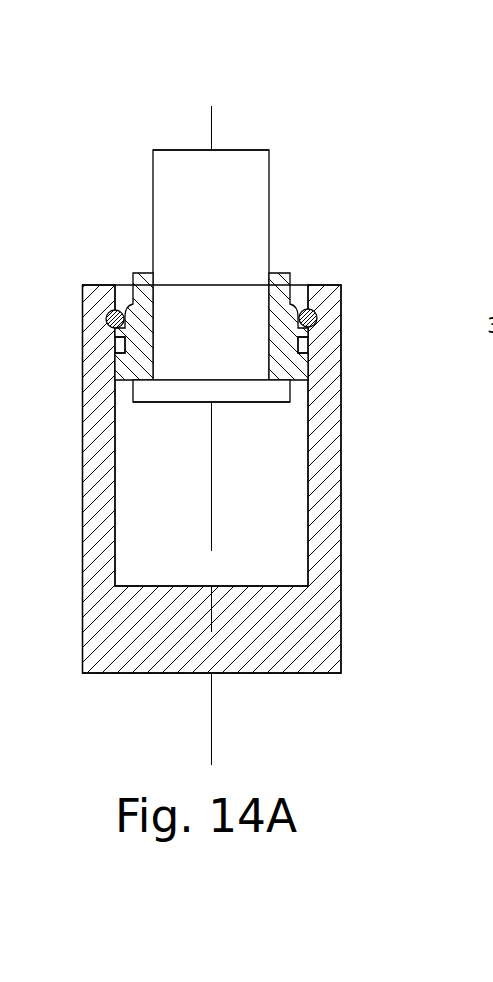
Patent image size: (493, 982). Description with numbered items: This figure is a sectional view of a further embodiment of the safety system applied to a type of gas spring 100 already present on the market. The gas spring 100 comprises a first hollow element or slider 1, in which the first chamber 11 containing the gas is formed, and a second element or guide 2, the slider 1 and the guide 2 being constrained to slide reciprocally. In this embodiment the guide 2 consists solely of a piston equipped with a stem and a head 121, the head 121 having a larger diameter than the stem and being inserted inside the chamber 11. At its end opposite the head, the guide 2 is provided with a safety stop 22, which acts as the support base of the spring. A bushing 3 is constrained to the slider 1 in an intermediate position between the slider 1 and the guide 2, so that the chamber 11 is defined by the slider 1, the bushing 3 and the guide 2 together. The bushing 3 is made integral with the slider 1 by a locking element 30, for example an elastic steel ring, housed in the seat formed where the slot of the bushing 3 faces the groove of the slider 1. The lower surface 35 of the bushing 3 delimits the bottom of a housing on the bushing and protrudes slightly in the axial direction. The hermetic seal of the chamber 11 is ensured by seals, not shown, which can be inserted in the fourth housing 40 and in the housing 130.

The slider 1 is at (97, 453).
The guide 2 is at (170, 183).
The bushing 3 is at (136, 272).
The first chamber 11 is at (272, 535).
The safety stop 22 is at (241, 128).
The locking element 30 is at (109, 318).
The lower surface 35 is at (281, 253).
The fourth housing 40 is at (117, 348).
The gas spring 100 is at (366, 735).
The head 121 is at (257, 415).
The housing 130 is at (118, 362).